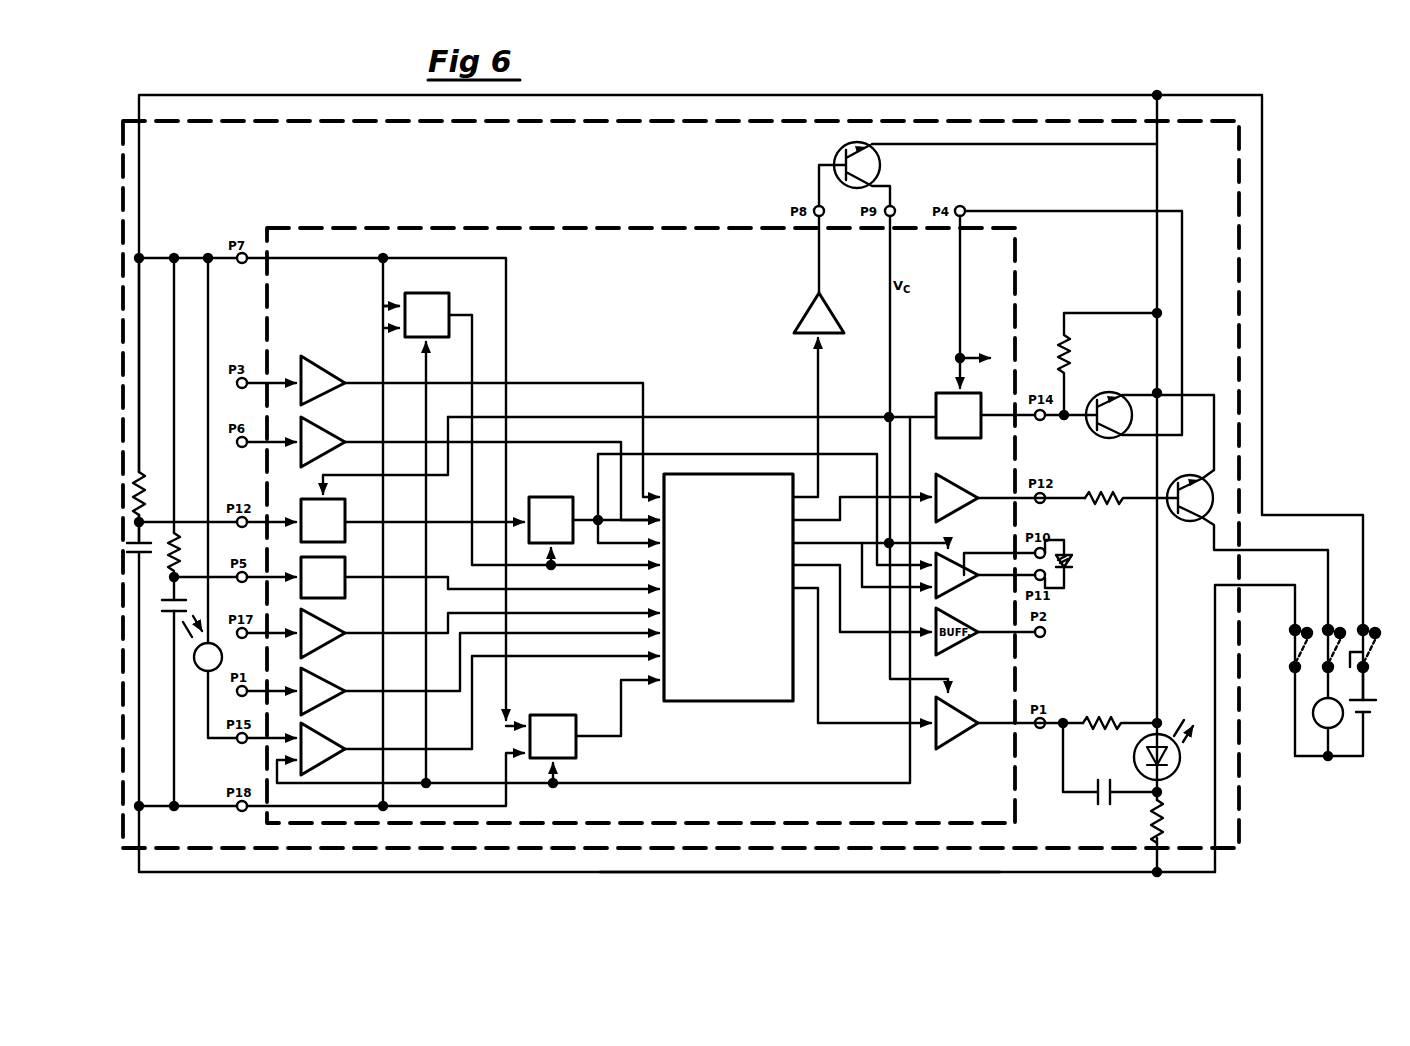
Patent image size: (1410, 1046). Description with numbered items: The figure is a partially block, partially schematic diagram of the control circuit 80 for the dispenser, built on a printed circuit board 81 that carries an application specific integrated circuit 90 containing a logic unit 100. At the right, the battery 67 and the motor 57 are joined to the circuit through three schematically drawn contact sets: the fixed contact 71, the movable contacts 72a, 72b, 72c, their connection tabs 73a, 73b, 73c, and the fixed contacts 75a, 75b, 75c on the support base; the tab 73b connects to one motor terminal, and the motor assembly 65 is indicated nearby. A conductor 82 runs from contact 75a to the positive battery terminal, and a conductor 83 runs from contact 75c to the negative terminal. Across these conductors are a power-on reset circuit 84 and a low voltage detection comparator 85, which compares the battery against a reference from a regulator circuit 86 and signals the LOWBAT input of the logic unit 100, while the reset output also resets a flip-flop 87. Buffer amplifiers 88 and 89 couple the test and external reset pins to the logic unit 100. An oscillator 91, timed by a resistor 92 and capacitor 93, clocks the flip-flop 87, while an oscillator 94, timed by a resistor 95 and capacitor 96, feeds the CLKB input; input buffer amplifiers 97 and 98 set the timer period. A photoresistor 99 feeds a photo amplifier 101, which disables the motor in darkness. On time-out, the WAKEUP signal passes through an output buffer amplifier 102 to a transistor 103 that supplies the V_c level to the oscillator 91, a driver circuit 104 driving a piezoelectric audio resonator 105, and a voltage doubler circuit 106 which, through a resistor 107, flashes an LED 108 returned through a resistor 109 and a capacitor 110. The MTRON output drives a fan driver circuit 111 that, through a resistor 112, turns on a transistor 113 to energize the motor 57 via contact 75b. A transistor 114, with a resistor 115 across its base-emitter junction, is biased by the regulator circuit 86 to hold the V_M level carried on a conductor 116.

The control circuit 80 is at (738, 74).
The printed circuit board 81 is at (665, 122).
The conductor 82 is at (632, 96).
The conductor 83 is at (760, 873).
The power-on reset circuit 84 is at (440, 293).
The low voltage detection comparator 85 is at (550, 715).
The regulator circuit 86 is at (945, 393).
The flip-flop 87 is at (545, 497).
The buffer amplifier 88 is at (325, 368).
The buffer amplifier 89 is at (325, 428).
The application specific integrated circuit 90 is at (640, 226).
The oscillator 91 is at (337, 501).
The resistor 92 is at (145, 490).
The capacitor 93 is at (150, 553).
The oscillator 94 is at (340, 560).
The resistor 95 is at (192, 540).
The capacitor 96 is at (170, 613).
The input buffer amplifier 97 is at (330, 625).
The input buffer amplifier 98 is at (330, 684).
The photoresistor 99 is at (195, 668).
The logic unit 100 is at (740, 701).
The photo amplifier 101 is at (328, 742).
The output buffer amplifier 102 is at (795, 320).
The transistor 103 is at (836, 152).
The driver circuit 104 is at (955, 553).
The piezoelectric audio resonator 105 is at (1073, 561).
The voltage doubler circuit 106 is at (960, 715).
The resistor 107 is at (1092, 715).
The LED 108 is at (1175, 770).
The resistor 109 is at (1150, 826).
The capacitor 110 is at (1095, 805).
The open collector fan driver circuit 111 is at (960, 480).
The resistor 112 is at (1100, 492).
The transistor 113 is at (1178, 478).
The transistor 114 is at (1100, 395).
The resistor 115 is at (1076, 342).
The conductor 116 is at (962, 350).
The motor 57 is at (1313, 720).
The motor circuit 65 is at (1310, 768).
The battery 67 is at (1355, 712).
The fixed contact 71 is at (1372, 652).
The movable contact 72a is at (1360, 630).
The movable contact 72b is at (1324, 630).
The movable contact 72c is at (1292, 654).
The connection tab 73a is at (1360, 672).
The connection tab 73b is at (1326, 672).
The connection tab 73c is at (1292, 672).
The fixed contact 75a is at (1370, 626).
The fixed contact 75b is at (1334, 626).
The fixed contact 75c is at (1290, 628).